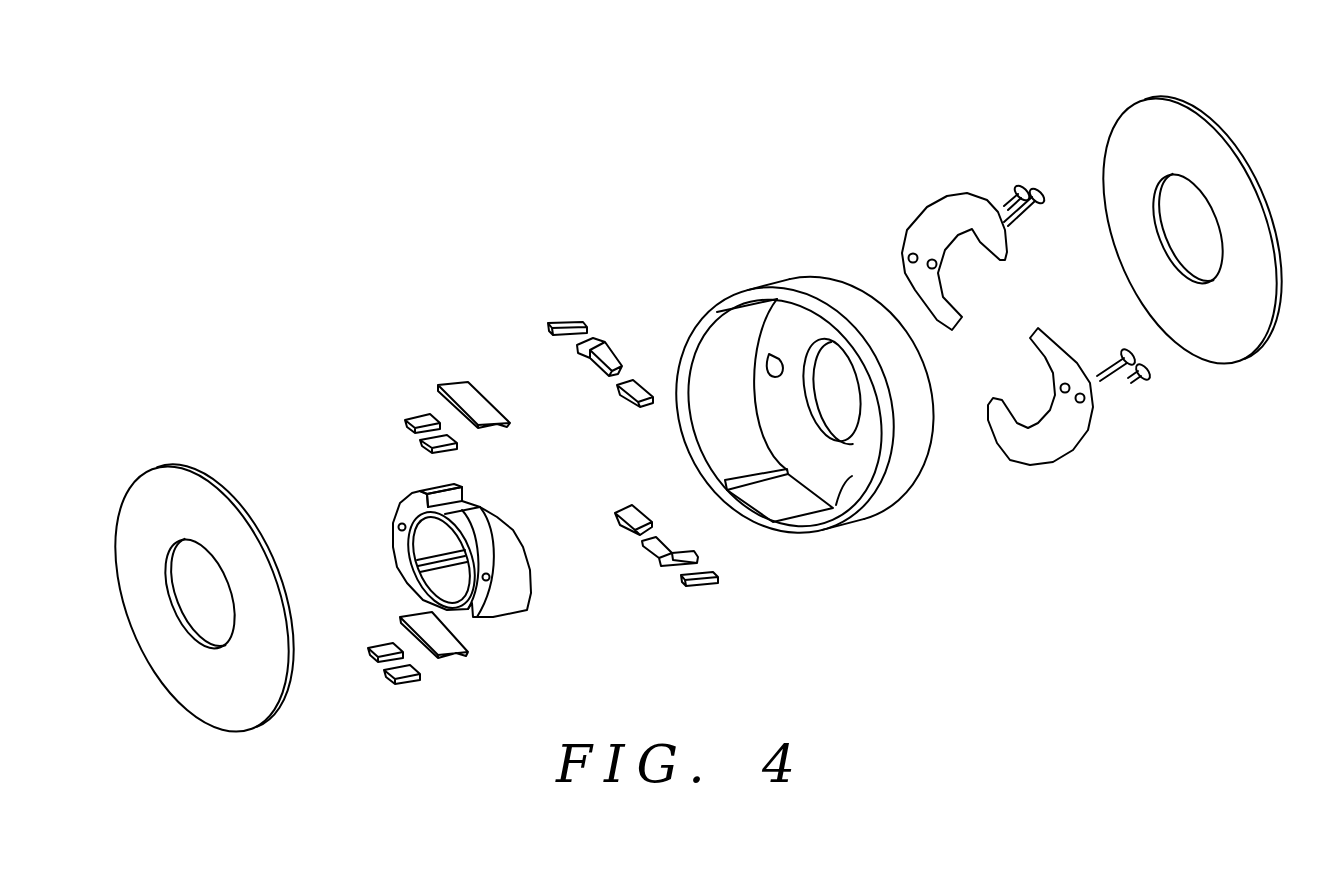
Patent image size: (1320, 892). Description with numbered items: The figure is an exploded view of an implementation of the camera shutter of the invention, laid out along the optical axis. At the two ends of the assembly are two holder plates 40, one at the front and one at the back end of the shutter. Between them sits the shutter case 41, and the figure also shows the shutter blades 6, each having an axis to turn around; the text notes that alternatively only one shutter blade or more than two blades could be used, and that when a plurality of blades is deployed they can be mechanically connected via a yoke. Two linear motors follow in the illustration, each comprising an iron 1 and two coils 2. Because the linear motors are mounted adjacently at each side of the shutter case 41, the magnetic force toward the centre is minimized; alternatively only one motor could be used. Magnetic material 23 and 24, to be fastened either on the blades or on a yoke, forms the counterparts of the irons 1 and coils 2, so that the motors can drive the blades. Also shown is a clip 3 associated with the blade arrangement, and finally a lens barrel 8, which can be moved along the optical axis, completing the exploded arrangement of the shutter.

The iron 1 is at (597, 360).
The coils 2 is at (548, 328).
The clip 3 is at (923, 200).
The shutter blades 6 is at (1067, 455).
The lens barrel 8 is at (395, 526).
The magnetic material 23 is at (421, 447).
The magnetic material 24 is at (487, 425).
The holder plates 40 is at (180, 494).
The shutter case 41 is at (775, 281).